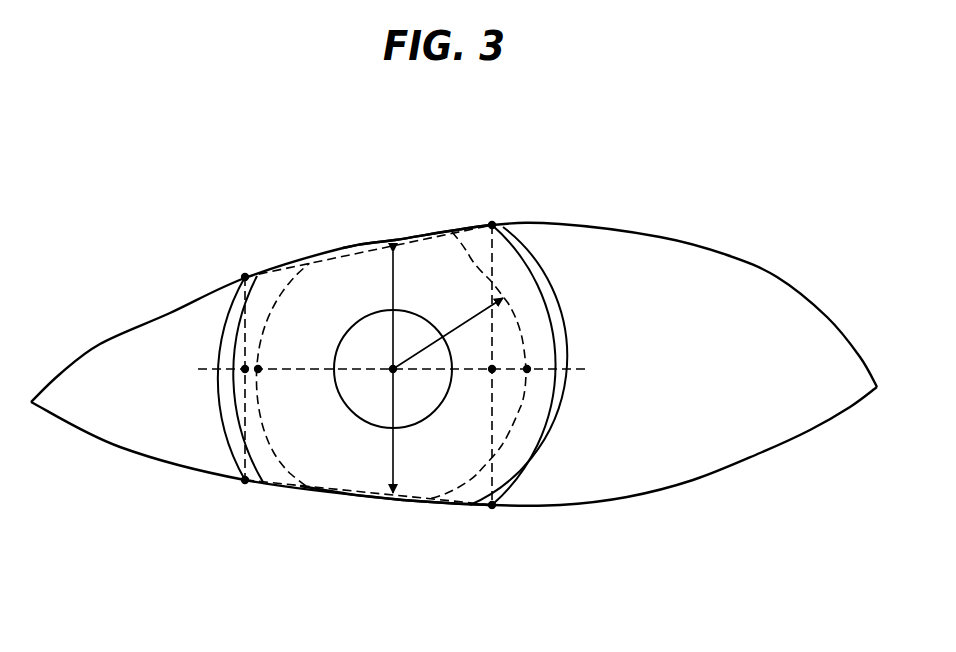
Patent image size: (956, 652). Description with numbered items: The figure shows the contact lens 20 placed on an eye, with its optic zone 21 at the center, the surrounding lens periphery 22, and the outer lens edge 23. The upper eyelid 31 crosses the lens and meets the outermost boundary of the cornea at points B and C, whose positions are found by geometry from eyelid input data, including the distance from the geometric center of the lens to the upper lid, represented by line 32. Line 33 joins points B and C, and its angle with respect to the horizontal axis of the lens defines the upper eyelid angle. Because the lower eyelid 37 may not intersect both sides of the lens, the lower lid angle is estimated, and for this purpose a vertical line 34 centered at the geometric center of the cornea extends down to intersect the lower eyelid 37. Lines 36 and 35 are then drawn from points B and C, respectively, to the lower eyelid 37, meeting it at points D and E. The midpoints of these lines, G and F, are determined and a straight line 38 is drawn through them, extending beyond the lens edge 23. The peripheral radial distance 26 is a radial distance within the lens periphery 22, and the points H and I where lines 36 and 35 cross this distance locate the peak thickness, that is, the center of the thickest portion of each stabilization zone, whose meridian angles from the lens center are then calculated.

The contact lens 20 is at (569, 302).
The optic zone 21 is at (393, 369).
The lens periphery 22 is at (362, 372).
The lens edge 23 is at (563, 347).
The peripheral radial distance 26 is at (478, 305).
The upper eyelid 31 is at (118, 332).
The line from lens center to upper lid 32 is at (395, 234).
The line joining points B and C 33 is at (345, 255).
The vertical line 34 is at (394, 507).
The line from point C to lower eyelid 35 is at (495, 418).
The line from point B to lower eyelid 36 is at (242, 357).
The lower eyelid 37 is at (144, 457).
The straight line through midpoints 38 is at (578, 369).